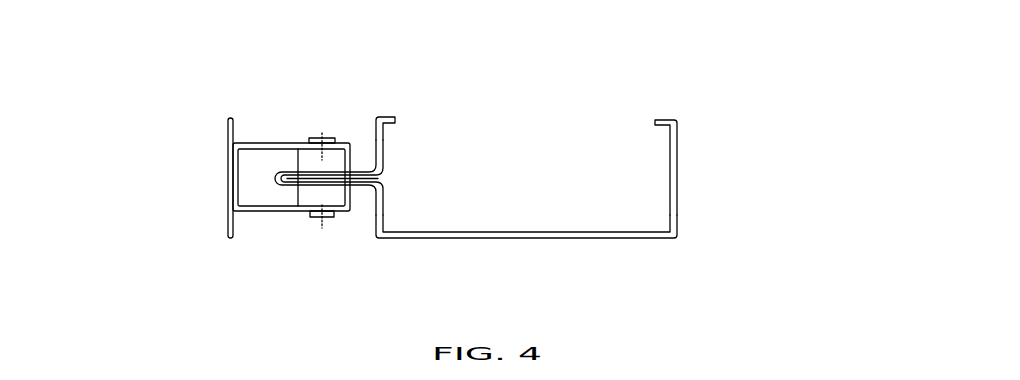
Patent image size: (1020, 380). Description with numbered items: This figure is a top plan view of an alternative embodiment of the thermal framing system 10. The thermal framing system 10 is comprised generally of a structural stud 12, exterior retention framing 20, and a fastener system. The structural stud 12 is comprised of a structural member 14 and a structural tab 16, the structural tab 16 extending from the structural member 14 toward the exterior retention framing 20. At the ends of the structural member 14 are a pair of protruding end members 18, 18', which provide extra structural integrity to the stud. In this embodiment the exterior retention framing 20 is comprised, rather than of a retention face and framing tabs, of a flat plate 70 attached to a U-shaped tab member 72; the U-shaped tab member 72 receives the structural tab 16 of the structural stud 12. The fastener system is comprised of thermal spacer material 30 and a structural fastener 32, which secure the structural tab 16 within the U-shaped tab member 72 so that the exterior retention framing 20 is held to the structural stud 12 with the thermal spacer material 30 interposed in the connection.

The thermal framing system 10 is at (695, 187).
The structural stud 12 is at (486, 127).
The structural member 14 is at (524, 230).
The structural tab 16 is at (357, 165).
The protruding end member 18 is at (396, 78).
The protruding end member 18' is at (676, 115).
The exterior retention framing 20 is at (291, 113).
The thermal spacer material 30 is at (298, 196).
The structural fastener 32 is at (305, 222).
The flat plate 70 is at (227, 170).
The U-shaped tab member 72 is at (291, 143).